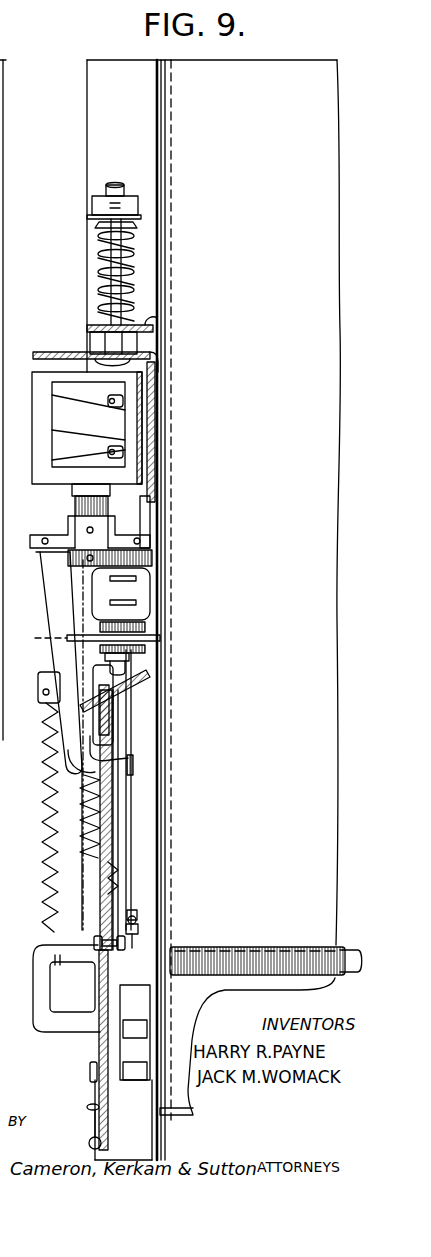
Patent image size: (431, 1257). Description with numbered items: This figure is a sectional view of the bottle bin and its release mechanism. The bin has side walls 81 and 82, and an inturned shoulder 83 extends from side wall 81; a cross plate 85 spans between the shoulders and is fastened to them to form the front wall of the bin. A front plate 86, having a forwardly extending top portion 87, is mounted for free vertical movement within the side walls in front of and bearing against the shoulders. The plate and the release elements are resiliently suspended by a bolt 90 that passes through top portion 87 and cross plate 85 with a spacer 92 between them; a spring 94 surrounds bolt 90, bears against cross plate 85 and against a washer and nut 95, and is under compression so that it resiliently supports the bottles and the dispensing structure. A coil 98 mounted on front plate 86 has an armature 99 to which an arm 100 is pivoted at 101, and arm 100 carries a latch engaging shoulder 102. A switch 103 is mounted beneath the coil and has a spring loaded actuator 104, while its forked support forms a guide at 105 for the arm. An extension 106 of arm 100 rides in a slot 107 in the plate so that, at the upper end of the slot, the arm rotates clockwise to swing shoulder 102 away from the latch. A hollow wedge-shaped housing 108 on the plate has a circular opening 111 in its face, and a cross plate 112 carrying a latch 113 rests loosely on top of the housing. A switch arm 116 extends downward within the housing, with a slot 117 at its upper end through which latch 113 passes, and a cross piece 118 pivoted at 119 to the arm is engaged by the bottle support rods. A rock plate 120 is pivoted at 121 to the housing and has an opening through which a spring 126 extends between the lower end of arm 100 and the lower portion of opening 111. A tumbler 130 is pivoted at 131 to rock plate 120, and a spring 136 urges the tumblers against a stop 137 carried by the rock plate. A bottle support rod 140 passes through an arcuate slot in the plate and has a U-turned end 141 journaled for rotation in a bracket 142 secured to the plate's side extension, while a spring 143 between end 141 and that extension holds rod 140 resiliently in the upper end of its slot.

The side wall 81 is at (281, 68).
The side wall 82 is at (6, 64).
The inturned shoulder 83 is at (166, 106).
The cross plate 85 is at (158, 318).
The front plate 86 is at (152, 440).
The forwardly extending top portion 87 is at (52, 352).
The bolt 90 is at (116, 262).
The spacer 92 is at (137, 344).
The spring 94 is at (134, 230).
The washer and nut 95 is at (141, 214).
The coil 98 is at (115, 420).
The armature 99 is at (70, 500).
The arm 100 is at (58, 660).
The pivot 101 is at (68, 560).
The latch engaging shoulder 102 is at (128, 752).
The switch 103 is at (150, 592).
The spring loaded actuator 104 is at (135, 660).
The guide 105 is at (35, 638).
The extension 106 is at (152, 556).
The slot 107 is at (150, 505).
The hollow wedge-shaped housing 108 is at (116, 875).
The circular opening 111 is at (116, 828).
The cross plate 112 is at (148, 685).
The latch 113 is at (80, 710).
The switch arm 116 is at (133, 773).
The slot 117 is at (131, 712).
The cross piece 118 is at (138, 932).
The pivot 119 is at (137, 915).
The rock plate 120 is at (100, 892).
The pivot 121 is at (94, 940).
The spring 126 is at (100, 808).
The tumbler 130 is at (98, 1040).
The pivot 131 is at (90, 1070).
The spring 136 is at (101, 1140).
The stop 137 is at (87, 1105).
The bottle support rod 140 is at (170, 958).
The U-turned end 141 is at (40, 950).
The bracket 142 is at (140, 1020).
The spring 143 is at (48, 835).